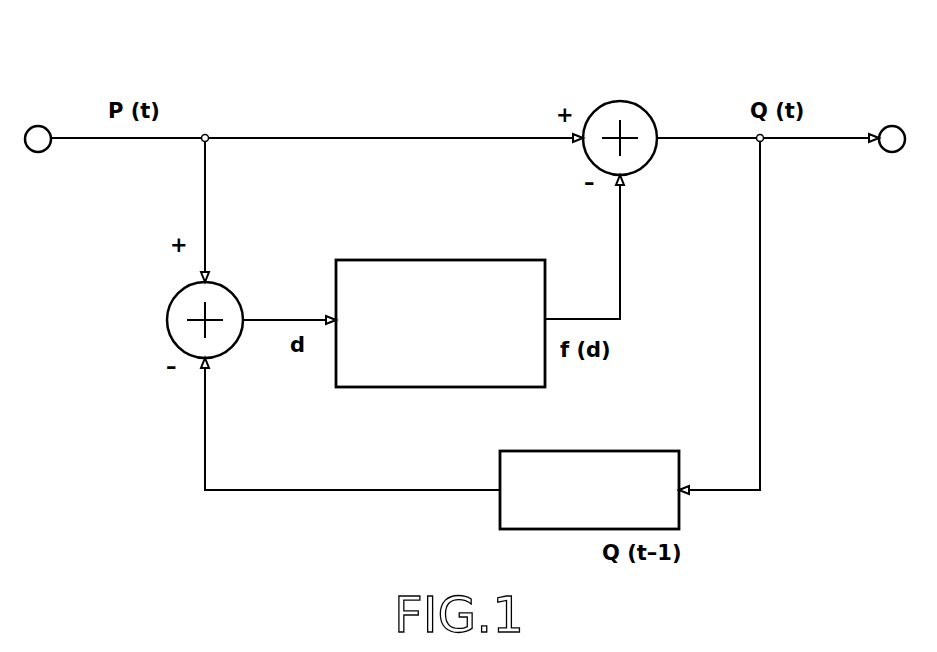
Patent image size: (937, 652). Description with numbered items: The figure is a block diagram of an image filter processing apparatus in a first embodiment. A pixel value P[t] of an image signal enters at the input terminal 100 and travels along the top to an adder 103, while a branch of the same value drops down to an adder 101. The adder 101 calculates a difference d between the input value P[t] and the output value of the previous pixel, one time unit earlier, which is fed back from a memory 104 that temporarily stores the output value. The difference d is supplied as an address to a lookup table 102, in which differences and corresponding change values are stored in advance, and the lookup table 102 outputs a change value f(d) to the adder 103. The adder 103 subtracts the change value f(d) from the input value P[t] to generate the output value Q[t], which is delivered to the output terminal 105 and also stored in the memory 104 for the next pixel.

The input terminal 100 is at (38, 126).
The adder 101 is at (172, 300).
The lookup table 102 is at (502, 258).
The adder 103 is at (634, 100).
The memory 104 is at (665, 450).
The output terminal 105 is at (892, 125).